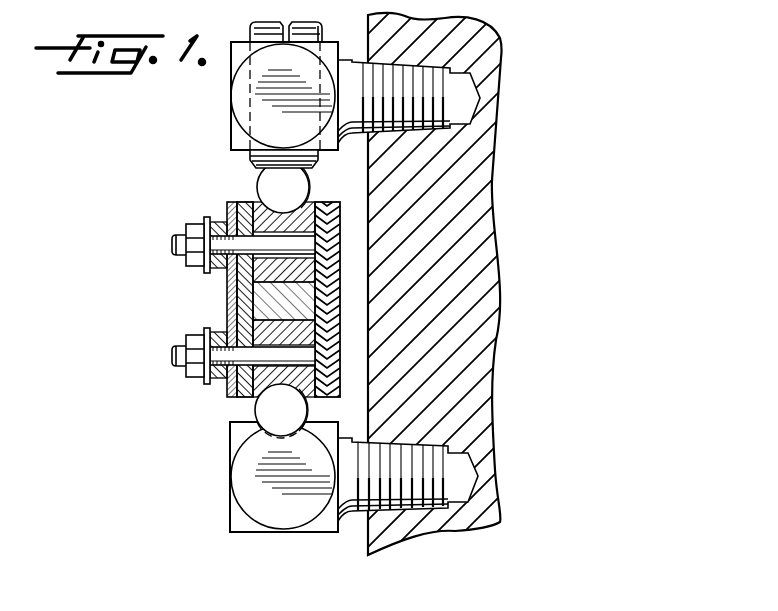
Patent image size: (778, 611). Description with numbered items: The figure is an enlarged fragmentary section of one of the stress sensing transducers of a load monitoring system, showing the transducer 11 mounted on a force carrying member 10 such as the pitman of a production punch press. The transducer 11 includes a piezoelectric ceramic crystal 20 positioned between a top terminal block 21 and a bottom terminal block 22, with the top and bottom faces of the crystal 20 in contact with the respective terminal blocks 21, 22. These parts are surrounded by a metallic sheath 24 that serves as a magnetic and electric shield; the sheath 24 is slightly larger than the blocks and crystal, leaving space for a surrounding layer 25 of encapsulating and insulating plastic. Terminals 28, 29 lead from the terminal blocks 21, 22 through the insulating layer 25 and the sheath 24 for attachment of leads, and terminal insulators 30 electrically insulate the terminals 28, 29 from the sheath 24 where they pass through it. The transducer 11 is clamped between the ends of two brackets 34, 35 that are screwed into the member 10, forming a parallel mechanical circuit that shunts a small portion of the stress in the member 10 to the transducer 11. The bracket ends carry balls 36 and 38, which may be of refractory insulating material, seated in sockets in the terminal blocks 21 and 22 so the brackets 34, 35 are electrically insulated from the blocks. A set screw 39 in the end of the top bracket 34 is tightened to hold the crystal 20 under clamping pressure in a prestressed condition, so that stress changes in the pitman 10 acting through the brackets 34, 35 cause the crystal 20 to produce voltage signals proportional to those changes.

The force carrying member 10 is at (484, 187).
The transducer 11 is at (186, 386).
The piezoelectric ceramic crystal 20 is at (228, 292).
The top terminal block 21 is at (258, 205).
The bottom terminal block 22 is at (242, 392).
The metallic sheath 24 is at (340, 248).
The insulating layer 25 is at (340, 306).
The terminal 28 is at (172, 246).
The terminal 29 is at (172, 354).
The terminal insulator 30 is at (228, 220).
The top bracket 34 is at (237, 99).
The bottom bracket 35 is at (237, 488).
The ball 36 is at (314, 172).
The ball 38 is at (312, 400).
The set screw 39 is at (248, 162).